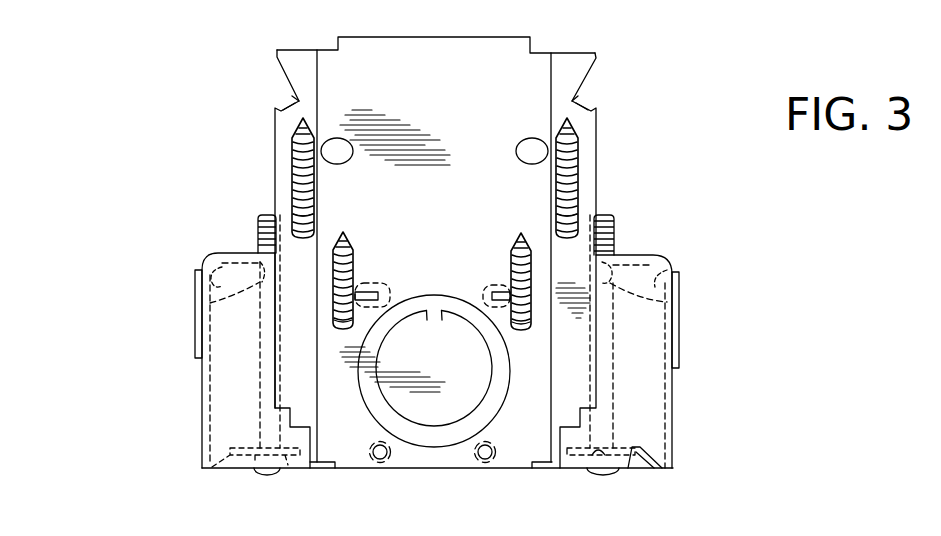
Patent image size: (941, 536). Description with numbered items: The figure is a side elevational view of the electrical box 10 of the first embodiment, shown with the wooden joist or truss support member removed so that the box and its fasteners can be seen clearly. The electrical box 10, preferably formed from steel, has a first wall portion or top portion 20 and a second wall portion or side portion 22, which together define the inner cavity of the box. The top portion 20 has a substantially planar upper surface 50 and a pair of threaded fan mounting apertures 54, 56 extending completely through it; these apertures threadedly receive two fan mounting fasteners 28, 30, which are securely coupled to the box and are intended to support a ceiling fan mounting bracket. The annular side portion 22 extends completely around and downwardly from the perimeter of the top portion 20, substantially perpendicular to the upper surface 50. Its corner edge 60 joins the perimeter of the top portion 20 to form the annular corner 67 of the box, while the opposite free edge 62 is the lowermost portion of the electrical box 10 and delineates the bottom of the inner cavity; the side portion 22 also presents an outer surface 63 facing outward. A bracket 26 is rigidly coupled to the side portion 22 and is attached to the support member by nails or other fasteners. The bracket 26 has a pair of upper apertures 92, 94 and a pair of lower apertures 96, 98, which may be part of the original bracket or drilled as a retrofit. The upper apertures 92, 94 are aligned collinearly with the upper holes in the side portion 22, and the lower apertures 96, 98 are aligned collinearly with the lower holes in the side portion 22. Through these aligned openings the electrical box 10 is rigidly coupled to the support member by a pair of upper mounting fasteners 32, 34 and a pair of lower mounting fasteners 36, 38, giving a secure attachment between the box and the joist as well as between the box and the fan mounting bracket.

The electrical box 10 is at (172, 100).
The top portion 20 is at (643, 255).
The side portion 22 is at (201, 427).
The bracket 26 is at (596, 75).
The fan mounting fastener 28 is at (262, 476).
The fan mounting fastener 30 is at (600, 476).
The upper mounting fastener 32 is at (292, 156).
The upper mounting fastener 34 is at (578, 162).
The lower mounting fastener 36 is at (354, 255).
The lower mounting fastener 38 is at (510, 255).
The upper surface 50 is at (233, 254).
The fan mounting aperture 54 is at (210, 303).
The fan mounting aperture 56 is at (667, 303).
The corner edge 60 is at (683, 280).
The free edge 62 is at (664, 474).
The outer surface 63 is at (227, 383).
The annular corner 67 is at (205, 283).
The upper aperture 92 is at (300, 222).
The upper aperture 94 is at (597, 197).
The lower aperture 96 is at (343, 329).
The lower aperture 98 is at (521, 332).